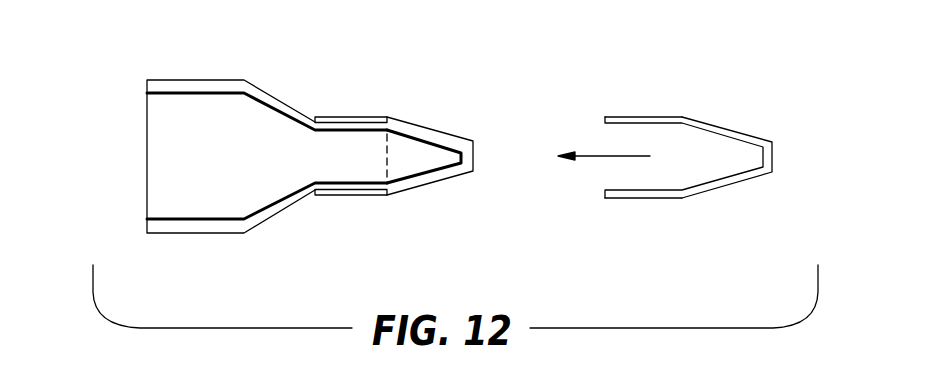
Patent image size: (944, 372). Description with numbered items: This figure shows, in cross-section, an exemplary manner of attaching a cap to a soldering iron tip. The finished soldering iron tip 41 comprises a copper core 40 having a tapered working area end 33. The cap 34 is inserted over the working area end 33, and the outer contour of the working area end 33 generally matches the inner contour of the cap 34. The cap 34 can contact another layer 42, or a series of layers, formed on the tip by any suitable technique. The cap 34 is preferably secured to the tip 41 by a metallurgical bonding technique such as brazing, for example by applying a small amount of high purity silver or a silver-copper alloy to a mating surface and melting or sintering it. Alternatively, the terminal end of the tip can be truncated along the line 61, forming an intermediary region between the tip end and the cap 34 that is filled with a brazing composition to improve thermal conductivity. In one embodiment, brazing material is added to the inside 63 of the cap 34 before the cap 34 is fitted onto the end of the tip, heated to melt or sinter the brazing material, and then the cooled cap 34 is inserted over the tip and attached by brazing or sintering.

The soldering iron tip 41 is at (119, 57).
The layer 42 is at (207, 80).
The copper core 40 is at (255, 142).
The working area end 33 is at (412, 159).
The cap 34 is at (433, 129).
The line 61 is at (383, 157).
The inside of the cap 63 is at (727, 160).